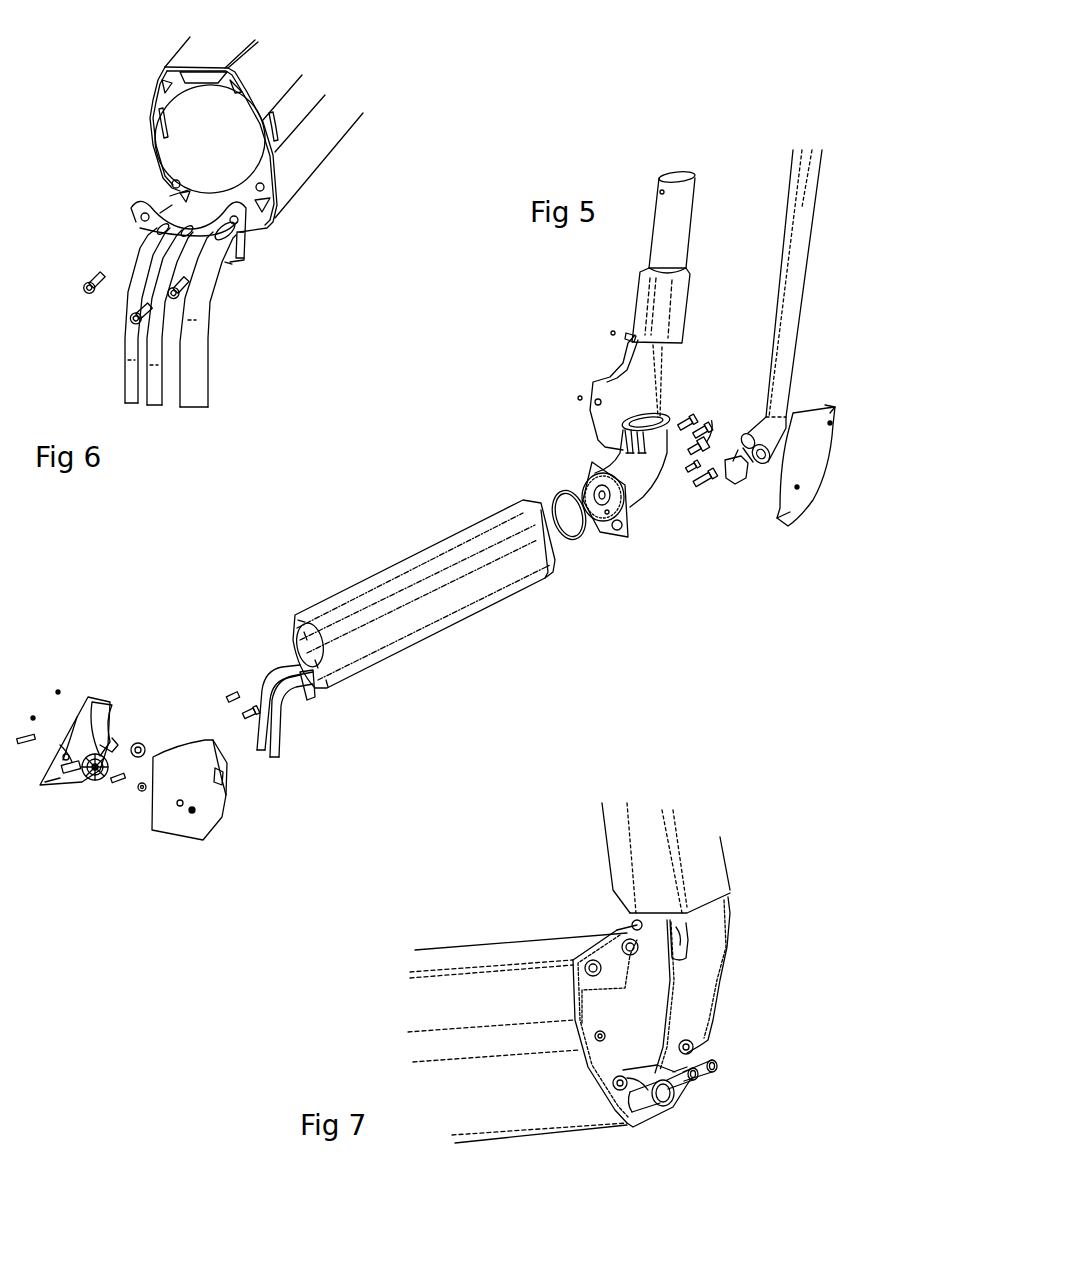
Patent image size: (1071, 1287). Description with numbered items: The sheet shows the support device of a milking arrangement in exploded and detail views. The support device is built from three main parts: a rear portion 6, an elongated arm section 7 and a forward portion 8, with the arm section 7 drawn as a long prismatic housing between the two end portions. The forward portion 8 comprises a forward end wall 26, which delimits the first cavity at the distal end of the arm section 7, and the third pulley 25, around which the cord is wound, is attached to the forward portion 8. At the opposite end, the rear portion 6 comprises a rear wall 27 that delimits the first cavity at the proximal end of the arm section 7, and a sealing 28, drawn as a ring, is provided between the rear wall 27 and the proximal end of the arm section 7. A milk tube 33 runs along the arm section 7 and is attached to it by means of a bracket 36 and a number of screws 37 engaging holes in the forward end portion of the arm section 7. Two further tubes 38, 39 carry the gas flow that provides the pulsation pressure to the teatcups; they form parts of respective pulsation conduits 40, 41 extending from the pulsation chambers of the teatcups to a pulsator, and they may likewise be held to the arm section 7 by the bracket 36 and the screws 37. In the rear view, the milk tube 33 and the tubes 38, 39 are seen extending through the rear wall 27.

In FIG. 5, the rear portion 6 is at (553, 372).
In FIG. 6, the arm section 7 is at (340, 150).
In FIG. 5, the arm section 7 is at (432, 550).
In FIG. 5, the forward portion 8 is at (86, 700).
In FIG. 5, the third pulley 25 is at (94, 783).
In FIG. 5, the forward end wall 26 is at (107, 722).
In FIG. 5, the rear wall 27 is at (623, 540).
In FIG. 7, the rear wall 27 is at (590, 1075).
In FIG. 5, the sealing 28 is at (556, 492).
In FIG. 6, the milk tube 33 is at (265, 226).
In FIG. 5, the milk tube 33 is at (315, 687).
In FIG. 7, the milk tube 33 is at (665, 1106).
In FIG. 6, the bracket 36 is at (246, 263).
In FIG. 6, the screws 37 is at (133, 322).
In FIG. 6, the tube 38 is at (158, 212).
In FIG. 7, the tube 38 is at (718, 1062).
In FIG. 6, the tube 39 is at (168, 195).
In FIG. 7, the tube 39 is at (700, 1078).
In FIG. 6, the pulsation conduit 40 is at (128, 370).
In FIG. 6, the pulsation conduit 41 is at (153, 378).